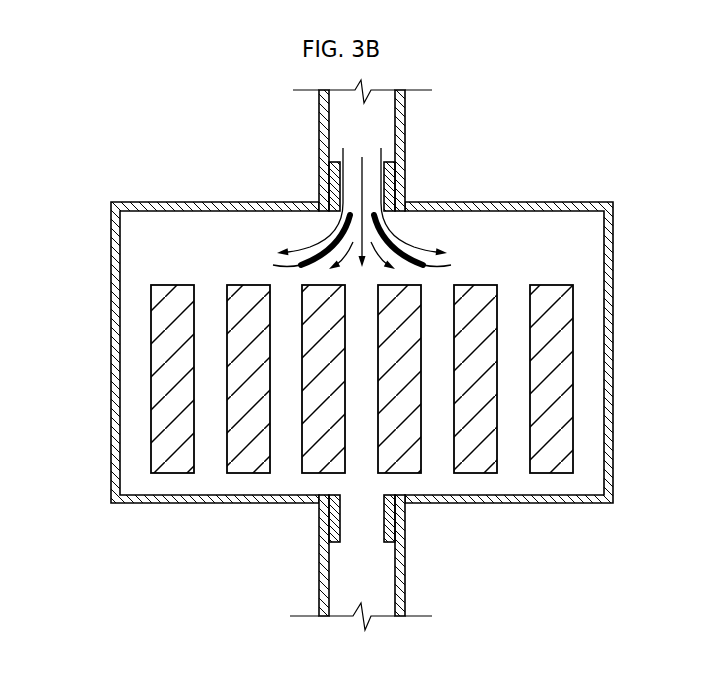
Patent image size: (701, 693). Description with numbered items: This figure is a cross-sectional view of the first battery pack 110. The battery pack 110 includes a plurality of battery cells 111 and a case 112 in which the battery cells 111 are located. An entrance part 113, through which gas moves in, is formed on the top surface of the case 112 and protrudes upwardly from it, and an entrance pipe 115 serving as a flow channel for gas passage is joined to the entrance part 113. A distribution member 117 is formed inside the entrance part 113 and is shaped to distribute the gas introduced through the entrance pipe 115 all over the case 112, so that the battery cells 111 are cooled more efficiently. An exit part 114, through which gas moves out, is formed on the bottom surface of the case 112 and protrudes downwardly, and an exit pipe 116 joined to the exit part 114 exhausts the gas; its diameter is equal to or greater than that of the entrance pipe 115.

The first battery pack 110 is at (93, 178).
The battery cells 111 is at (158, 321).
The case 112 is at (112, 268).
The entrance part 113 is at (396, 180).
The exit part 114 is at (396, 531).
The entrance pipe 115 is at (321, 141).
The exit pipe 116 is at (322, 565).
The distribution member 117 is at (452, 266).